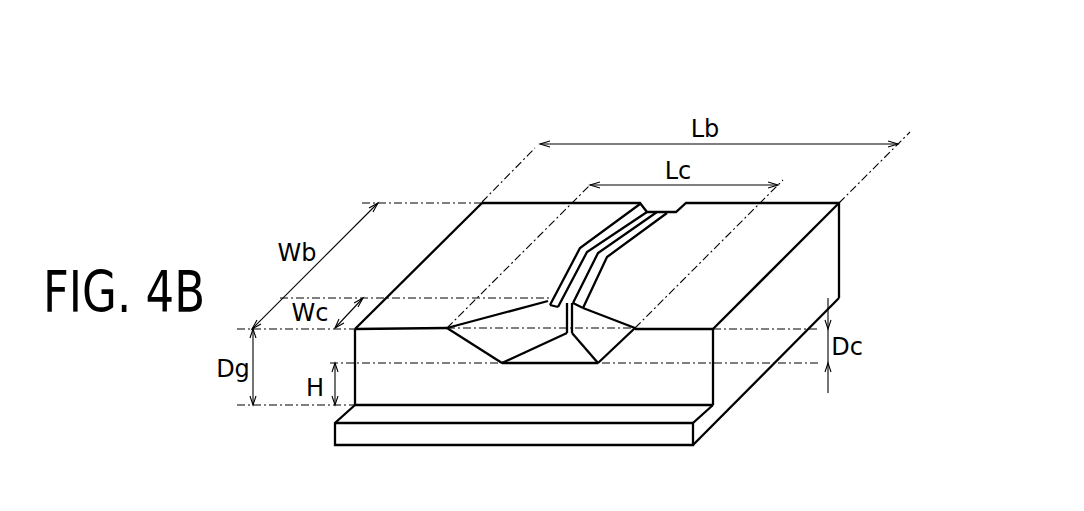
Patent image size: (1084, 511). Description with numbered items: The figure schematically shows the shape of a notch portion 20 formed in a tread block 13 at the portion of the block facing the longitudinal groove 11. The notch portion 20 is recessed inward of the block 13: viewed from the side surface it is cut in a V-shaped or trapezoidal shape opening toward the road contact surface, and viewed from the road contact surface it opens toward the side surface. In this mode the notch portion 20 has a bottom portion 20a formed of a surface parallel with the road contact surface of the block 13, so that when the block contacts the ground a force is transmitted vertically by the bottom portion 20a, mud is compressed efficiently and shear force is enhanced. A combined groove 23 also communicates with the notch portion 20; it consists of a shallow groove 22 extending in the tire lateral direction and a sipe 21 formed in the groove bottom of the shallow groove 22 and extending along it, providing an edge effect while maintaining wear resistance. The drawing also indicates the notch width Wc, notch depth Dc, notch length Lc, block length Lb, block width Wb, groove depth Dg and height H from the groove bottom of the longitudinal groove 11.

The longitudinal groove 11 is at (677, 415).
The block 13 is at (800, 210).
The notch portion 20 is at (541, 397).
The bottom portion 20a is at (563, 355).
The sipe 21 is at (655, 212).
The shallow groove 22 is at (607, 228).
The combined groove 23 is at (592, 176).